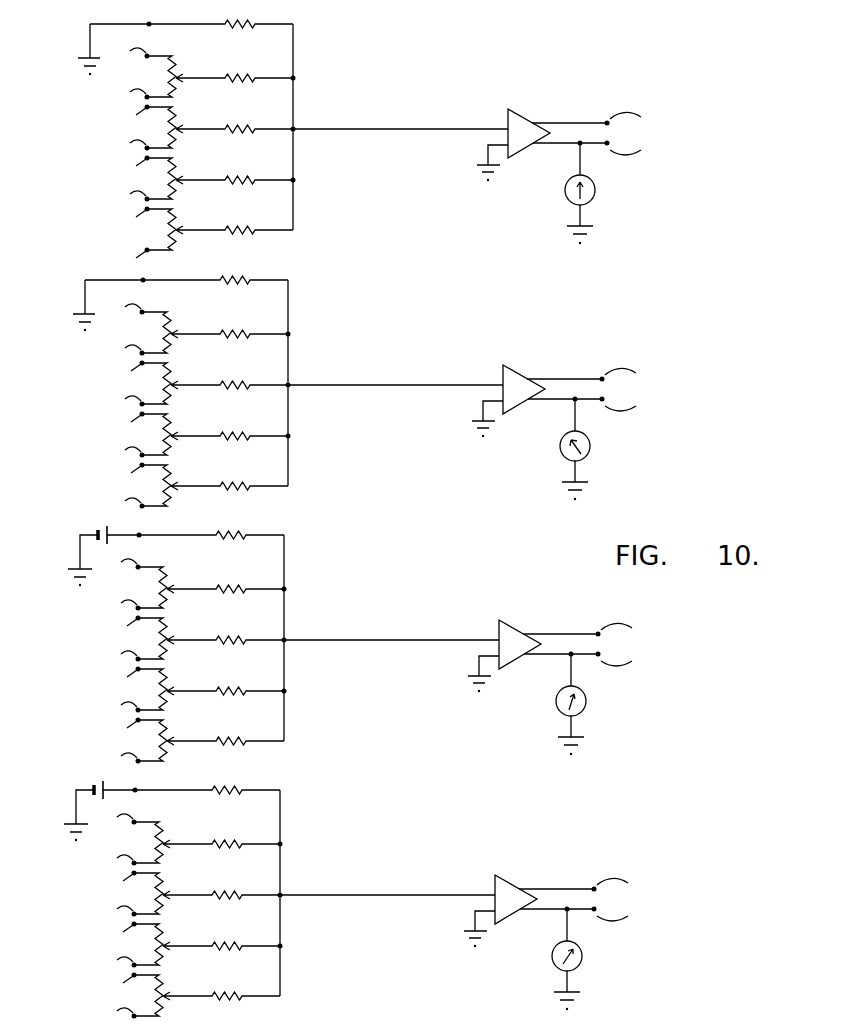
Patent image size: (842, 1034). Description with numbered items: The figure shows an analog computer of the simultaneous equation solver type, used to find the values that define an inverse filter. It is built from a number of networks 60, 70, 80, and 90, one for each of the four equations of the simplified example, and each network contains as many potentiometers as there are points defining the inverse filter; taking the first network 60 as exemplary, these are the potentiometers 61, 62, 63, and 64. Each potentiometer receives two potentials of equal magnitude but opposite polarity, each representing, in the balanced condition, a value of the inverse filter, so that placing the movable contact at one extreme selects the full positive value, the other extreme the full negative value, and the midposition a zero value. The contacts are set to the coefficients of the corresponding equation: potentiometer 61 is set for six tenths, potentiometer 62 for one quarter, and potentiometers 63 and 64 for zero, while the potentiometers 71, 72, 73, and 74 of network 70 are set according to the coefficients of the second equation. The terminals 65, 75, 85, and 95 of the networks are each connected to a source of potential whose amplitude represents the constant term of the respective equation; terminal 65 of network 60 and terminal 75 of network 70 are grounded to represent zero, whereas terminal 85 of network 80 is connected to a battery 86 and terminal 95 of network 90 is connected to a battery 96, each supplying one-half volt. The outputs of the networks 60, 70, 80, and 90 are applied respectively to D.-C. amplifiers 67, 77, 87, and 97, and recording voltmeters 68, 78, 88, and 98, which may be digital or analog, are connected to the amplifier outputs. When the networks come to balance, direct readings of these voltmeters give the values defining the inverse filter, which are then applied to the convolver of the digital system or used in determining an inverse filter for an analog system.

The network 60 is at (293, 129).
The potentiometer 61 is at (176, 88).
The potentiometer 62 is at (176, 139).
The potentiometer 63 is at (176, 190).
The potentiometer 64 is at (176, 241).
The terminal 65 is at (149, 24).
The D.-C. amplifier 67 is at (508, 113).
The voltmeter 68 is at (595, 191).
The network 70 is at (288, 386).
The potentiometer 71 is at (171, 344).
The potentiometer 72 is at (171, 395).
The potentiometer 73 is at (171, 446).
The potentiometer 74 is at (171, 497).
The terminal 75 is at (143, 280).
The D.-C. amplifier 77 is at (503, 369).
The voltmeter 78 is at (590, 447).
The network 80 is at (269, 642).
The terminal 85 is at (139, 535).
The battery 86 is at (94, 517).
The D.-C. amplifier 87 is at (499, 624).
The voltmeter 88 is at (586, 702).
The network 90 is at (266, 897).
The terminal 95 is at (135, 790).
The battery 96 is at (88, 773).
The D.-C. amplifier 97 is at (495, 879).
The voltmeter 98 is at (582, 957).